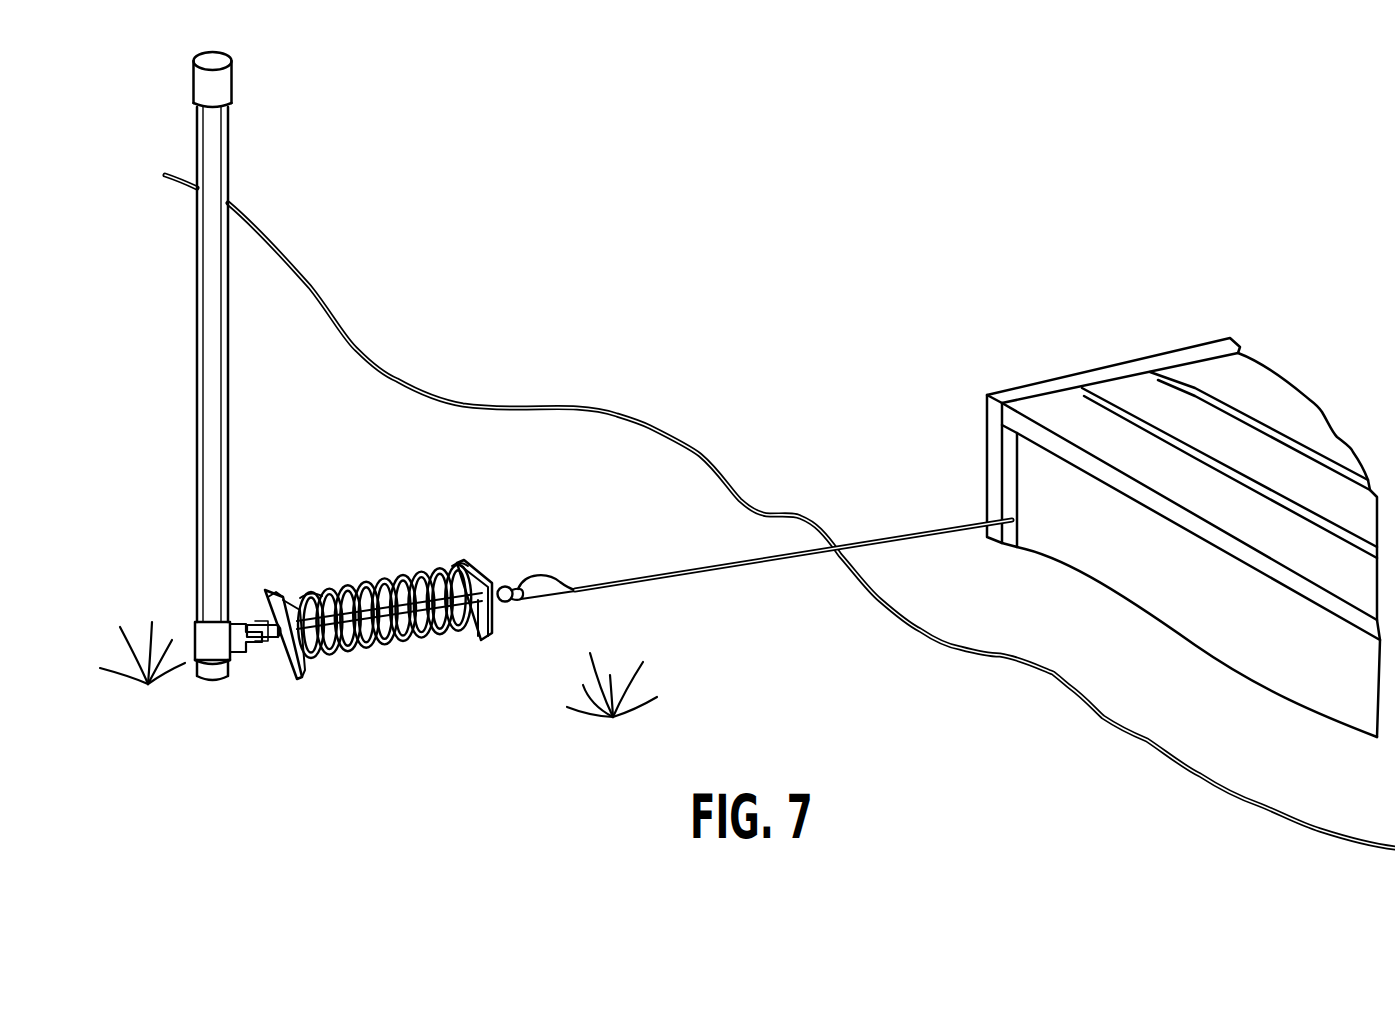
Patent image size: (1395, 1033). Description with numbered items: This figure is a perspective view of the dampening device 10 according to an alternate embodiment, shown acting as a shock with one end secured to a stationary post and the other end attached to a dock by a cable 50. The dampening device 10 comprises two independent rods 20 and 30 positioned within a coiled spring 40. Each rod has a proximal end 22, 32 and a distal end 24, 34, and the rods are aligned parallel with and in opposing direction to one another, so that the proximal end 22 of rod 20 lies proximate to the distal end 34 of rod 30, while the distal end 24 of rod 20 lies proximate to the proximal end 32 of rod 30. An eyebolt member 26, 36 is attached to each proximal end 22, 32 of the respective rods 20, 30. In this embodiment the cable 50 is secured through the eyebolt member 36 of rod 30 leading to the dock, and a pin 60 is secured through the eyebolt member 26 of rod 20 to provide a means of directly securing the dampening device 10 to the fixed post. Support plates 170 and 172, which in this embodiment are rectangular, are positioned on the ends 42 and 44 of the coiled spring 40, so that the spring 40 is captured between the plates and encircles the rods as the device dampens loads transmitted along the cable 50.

The dampening device 10 is at (397, 510).
The rod 20 is at (255, 644).
The proximal end 22 is at (263, 642).
The distal end 24 is at (430, 577).
The eyebolt member 26 is at (269, 597).
The rod 30 is at (494, 588).
The proximal end 32 is at (498, 603).
The distal end 34 is at (395, 638).
The eyebolt member 36 is at (533, 598).
The spring 40 is at (383, 581).
The end of coiled spring 42 is at (304, 595).
The end of coiled spring 44 is at (462, 566).
The rope 50 is at (658, 578).
The pin 60 is at (252, 626).
The support plate 170 is at (299, 675).
The support plate 172 is at (491, 633).